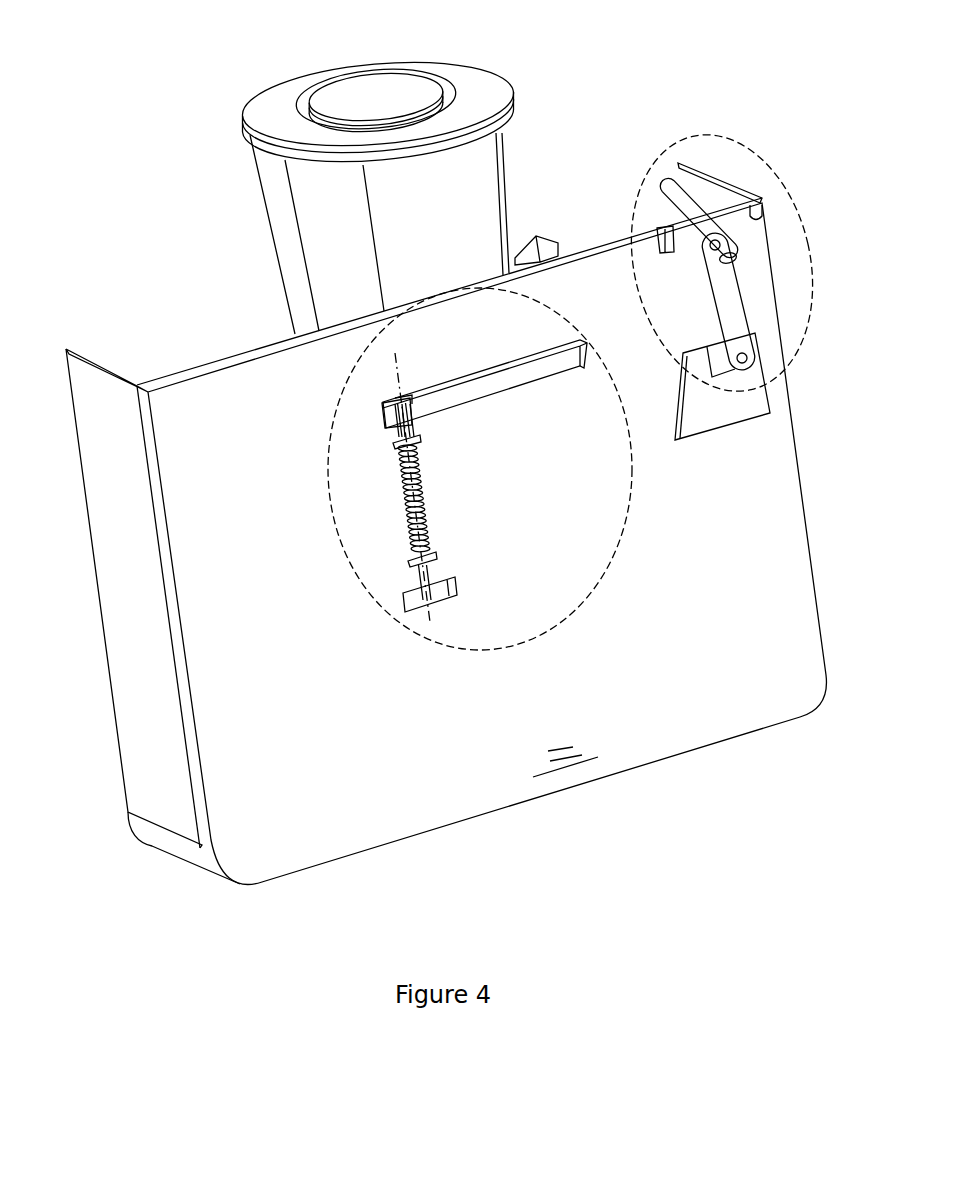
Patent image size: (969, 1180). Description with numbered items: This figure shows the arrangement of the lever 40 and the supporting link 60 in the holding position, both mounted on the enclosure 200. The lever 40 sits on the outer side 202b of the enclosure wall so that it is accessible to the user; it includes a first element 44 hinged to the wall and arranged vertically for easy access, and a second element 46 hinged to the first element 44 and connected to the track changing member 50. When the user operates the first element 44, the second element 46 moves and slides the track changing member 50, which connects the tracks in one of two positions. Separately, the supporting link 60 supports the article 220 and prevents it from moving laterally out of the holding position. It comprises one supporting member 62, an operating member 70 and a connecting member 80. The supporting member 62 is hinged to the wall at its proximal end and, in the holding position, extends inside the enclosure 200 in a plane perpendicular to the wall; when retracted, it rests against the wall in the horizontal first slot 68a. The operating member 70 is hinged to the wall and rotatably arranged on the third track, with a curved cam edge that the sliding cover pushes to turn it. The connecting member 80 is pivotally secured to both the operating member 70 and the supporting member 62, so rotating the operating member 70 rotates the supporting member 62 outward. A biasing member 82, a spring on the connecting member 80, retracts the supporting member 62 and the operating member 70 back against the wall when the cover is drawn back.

The enclosure 200 is at (470, 830).
The outer side of the wall 202b is at (565, 749).
The article 220 is at (458, 58).
The lever 40 is at (774, 172).
The first element 44 is at (660, 182).
The second element 46 is at (745, 287).
The track changing member 50 is at (773, 403).
The supporting link 60 is at (337, 562).
The supporting member 62 is at (408, 406).
The first slot 68a is at (510, 363).
The operating member 70 is at (455, 580).
The connecting member 80 is at (427, 418).
The biasing member 82 is at (423, 508).